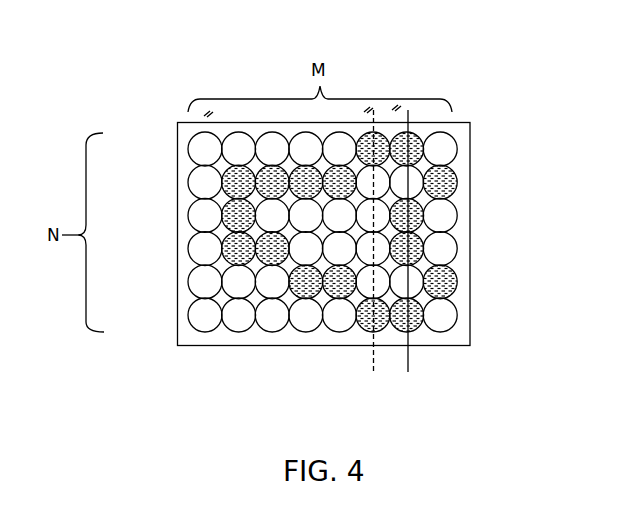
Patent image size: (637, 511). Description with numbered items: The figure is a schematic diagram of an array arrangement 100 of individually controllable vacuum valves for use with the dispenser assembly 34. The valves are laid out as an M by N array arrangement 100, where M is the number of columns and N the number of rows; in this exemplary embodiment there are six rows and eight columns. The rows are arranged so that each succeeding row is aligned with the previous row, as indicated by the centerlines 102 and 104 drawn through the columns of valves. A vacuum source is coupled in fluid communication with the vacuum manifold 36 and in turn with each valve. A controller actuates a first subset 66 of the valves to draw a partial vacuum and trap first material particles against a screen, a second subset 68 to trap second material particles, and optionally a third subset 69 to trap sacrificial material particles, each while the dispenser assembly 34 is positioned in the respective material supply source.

The array arrangement 100 is at (105, 64).
The dispenser assembly 34 is at (465, 266).
The vacuum manifold 36 is at (473, 141).
The first subset 66 is at (428, 228).
The second subset 68 is at (232, 216).
The third subset 69 is at (303, 331).
The centerline 102 is at (373, 363).
The centerline 104 is at (410, 362).